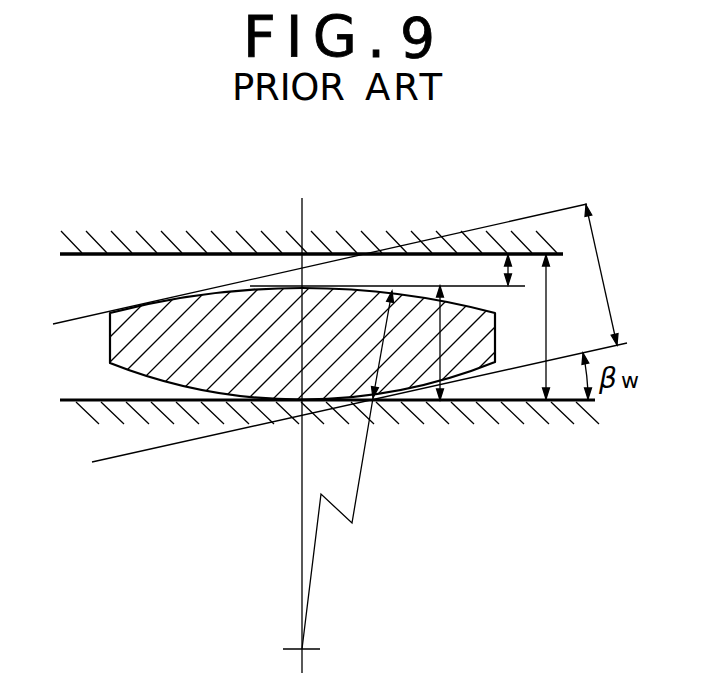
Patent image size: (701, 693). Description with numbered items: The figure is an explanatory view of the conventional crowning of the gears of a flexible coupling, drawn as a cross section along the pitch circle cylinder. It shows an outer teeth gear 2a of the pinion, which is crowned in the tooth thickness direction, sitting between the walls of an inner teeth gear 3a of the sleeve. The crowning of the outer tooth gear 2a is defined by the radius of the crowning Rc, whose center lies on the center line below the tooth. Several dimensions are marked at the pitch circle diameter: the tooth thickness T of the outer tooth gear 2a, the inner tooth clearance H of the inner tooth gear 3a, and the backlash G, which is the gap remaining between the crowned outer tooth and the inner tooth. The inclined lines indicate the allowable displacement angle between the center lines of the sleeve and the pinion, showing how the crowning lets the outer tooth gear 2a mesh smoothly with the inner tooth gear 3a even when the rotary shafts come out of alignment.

The outer teeth gear 2a is at (118, 345).
The inner teeth gear 3a is at (153, 242).
The backlash G is at (492, 270).
The inner tooth clearance H is at (528, 302).
The tooth thickness T is at (402, 344).
The radius of the crowning Rc is at (337, 523).